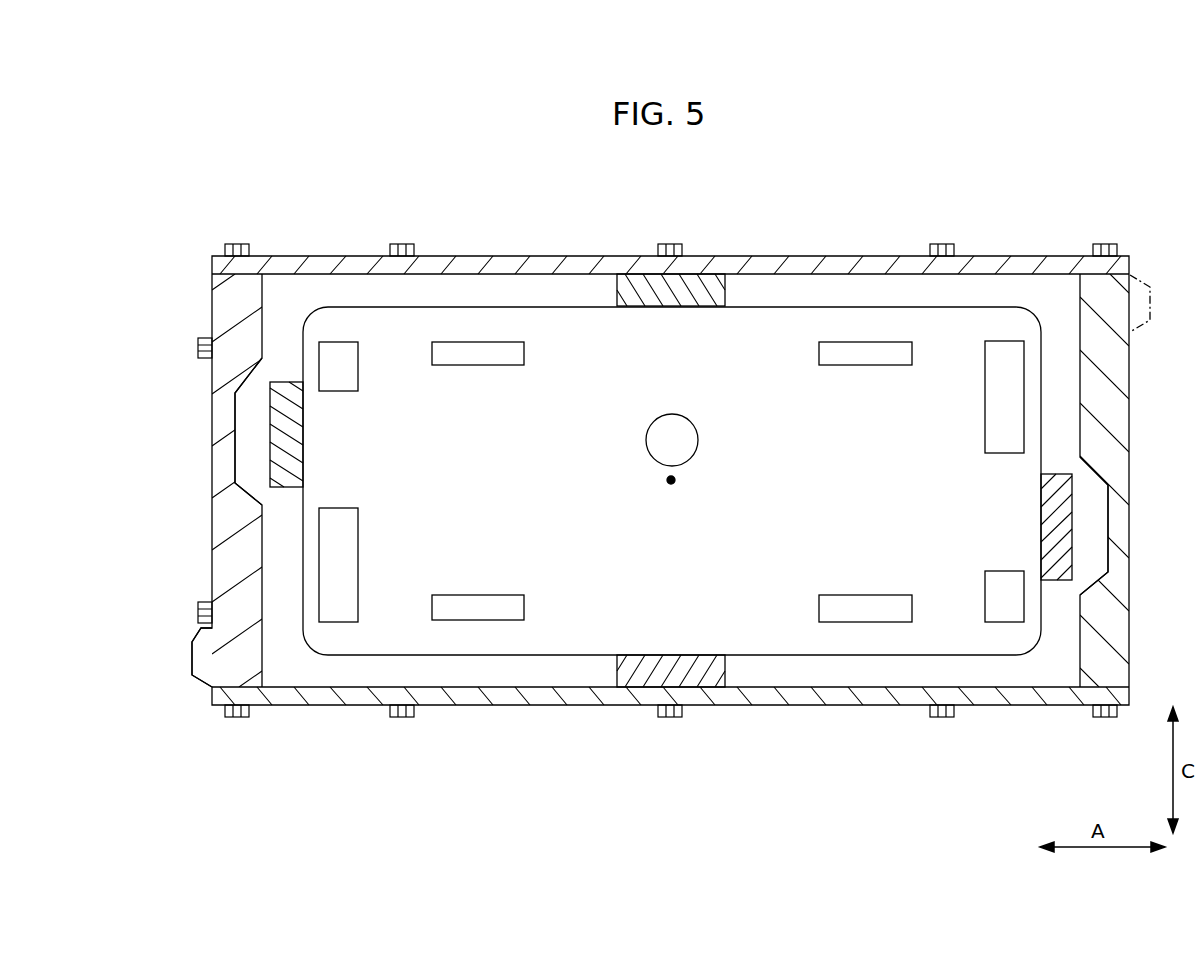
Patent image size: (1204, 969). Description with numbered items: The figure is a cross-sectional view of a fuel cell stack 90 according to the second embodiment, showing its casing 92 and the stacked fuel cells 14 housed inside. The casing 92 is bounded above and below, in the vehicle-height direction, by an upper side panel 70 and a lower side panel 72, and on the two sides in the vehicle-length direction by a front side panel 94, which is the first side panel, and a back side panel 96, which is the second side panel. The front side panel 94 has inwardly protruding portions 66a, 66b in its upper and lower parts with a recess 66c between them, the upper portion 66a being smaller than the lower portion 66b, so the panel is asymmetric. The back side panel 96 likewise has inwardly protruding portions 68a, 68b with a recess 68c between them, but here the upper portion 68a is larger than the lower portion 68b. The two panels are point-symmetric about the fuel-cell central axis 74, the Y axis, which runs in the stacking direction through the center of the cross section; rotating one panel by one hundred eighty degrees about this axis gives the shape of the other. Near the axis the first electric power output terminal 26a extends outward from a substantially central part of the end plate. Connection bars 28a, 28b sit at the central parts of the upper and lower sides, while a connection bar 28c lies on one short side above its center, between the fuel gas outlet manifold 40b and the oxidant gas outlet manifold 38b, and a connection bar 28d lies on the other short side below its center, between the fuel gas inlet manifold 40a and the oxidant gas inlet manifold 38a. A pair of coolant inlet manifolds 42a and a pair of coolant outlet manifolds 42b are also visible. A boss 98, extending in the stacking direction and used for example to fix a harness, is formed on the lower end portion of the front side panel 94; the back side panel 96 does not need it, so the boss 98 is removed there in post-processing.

The fuel cells 14 is at (890, 312).
The first electric power output terminal 26a is at (693, 431).
The connection bar 28a is at (648, 300).
The connection bar 28b is at (690, 665).
The connection bar 28c is at (292, 480).
The connection bar 28d is at (1050, 484).
The oxidant gas inlet manifold 38a is at (994, 421).
The oxidant gas outlet manifold 38b is at (346, 545).
The fuel gas inlet manifold 40a is at (997, 577).
The fuel gas outlet manifold 40b is at (346, 386).
The coolant inlet manifolds 42a is at (866, 358).
The coolant outlet manifolds 42b is at (478, 362).
The inwardly protruding portion 66a is at (248, 303).
The inwardly protruding portion 66b is at (248, 668).
The recess 66c is at (245, 462).
The inwardly protruding portion 68a is at (1095, 292).
The inwardly protruding portion 68b is at (1094, 660).
The recess 68c is at (1098, 515).
The upper side panel 70 is at (744, 257).
The lower side panel 72 is at (779, 697).
The fuel-cell central axis 74 is at (678, 481).
The fuel cell stack 90 is at (1006, 169).
The casing 92 is at (1096, 222).
The front side panel 94 is at (203, 411).
The back side panel 96 is at (1141, 550).
The boss 98 is at (197, 657).